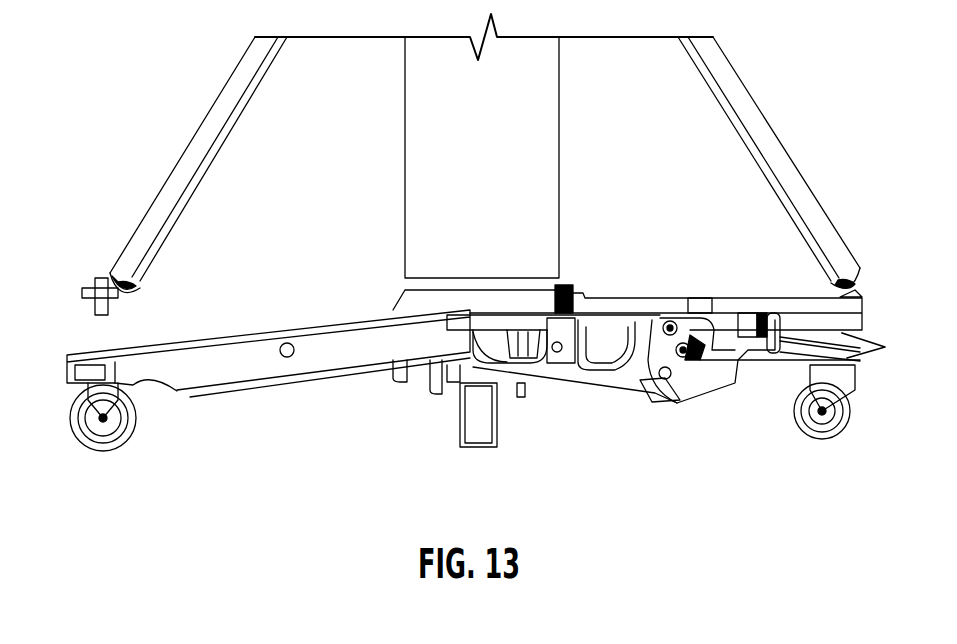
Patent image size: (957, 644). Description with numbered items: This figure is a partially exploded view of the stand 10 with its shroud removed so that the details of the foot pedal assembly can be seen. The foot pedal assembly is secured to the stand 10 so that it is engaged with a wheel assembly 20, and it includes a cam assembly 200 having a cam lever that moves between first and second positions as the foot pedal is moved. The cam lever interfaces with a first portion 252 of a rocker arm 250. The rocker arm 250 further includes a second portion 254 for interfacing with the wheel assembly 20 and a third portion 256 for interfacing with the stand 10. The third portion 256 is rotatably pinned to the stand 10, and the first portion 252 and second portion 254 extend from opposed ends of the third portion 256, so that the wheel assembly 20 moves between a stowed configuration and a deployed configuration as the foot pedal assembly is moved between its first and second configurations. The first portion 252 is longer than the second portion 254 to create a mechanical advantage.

The stand 10 is at (245, 382).
The wheel assembly 20 is at (477, 428).
The cam assembly 200 is at (707, 396).
The rocker arm 250 is at (562, 411).
The first portion of the rocker arm 252 is at (717, 367).
The second portion of the rocker arm 254 is at (498, 372).
The third portion of the rocker arm 256 is at (641, 402).